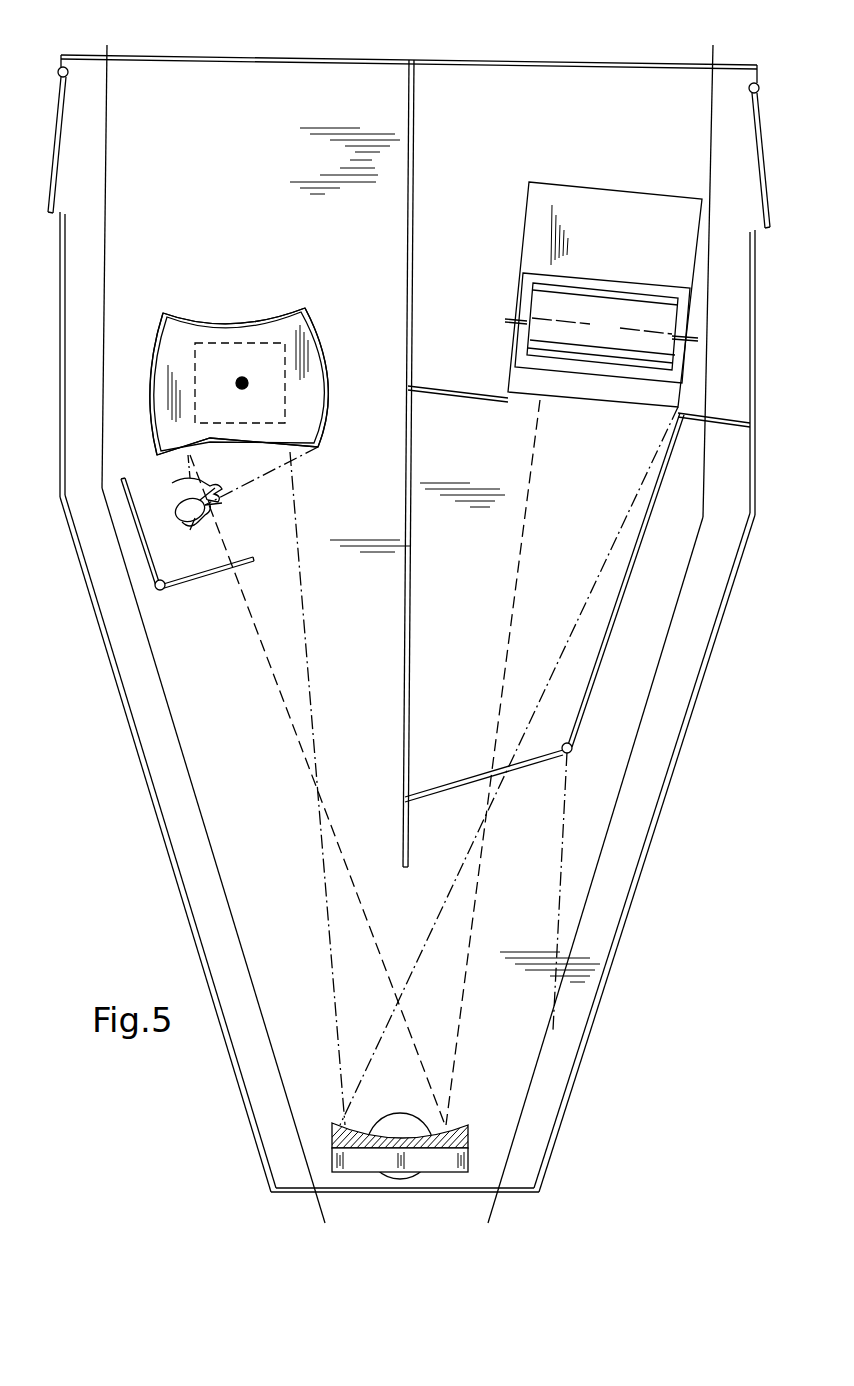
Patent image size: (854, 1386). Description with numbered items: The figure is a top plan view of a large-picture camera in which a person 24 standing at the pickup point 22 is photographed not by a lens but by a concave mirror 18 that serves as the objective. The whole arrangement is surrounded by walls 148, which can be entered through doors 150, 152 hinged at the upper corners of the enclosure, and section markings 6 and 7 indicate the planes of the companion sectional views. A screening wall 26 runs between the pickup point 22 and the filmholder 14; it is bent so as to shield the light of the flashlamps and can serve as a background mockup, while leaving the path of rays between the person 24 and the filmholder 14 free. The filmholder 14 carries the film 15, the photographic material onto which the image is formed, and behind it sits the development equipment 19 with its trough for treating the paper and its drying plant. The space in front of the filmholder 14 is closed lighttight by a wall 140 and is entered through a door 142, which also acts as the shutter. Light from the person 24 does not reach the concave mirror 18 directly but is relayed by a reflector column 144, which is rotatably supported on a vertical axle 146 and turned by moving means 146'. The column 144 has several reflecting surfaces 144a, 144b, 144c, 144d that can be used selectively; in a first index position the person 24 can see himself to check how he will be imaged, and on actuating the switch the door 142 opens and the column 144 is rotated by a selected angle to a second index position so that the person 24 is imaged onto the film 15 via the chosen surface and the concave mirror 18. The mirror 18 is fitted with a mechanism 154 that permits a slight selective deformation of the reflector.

The section line 6- 6 is at (686, 50).
The section line 7- 7 is at (137, 48).
The filmholder 14 is at (518, 380).
The film 15 is at (530, 398).
The concave mirror 18 is at (470, 1133).
The development equipment 19 is at (537, 298).
The pickup point 22 is at (260, 530).
The person 24 is at (187, 534).
The screening wall 26 is at (410, 620).
The wall 140 is at (612, 612).
The door 142 is at (500, 770).
The reflector column 144 is at (183, 332).
The bottom edge of mirror 144 144a is at (306, 456).
The left edge of mirror 144 144b is at (148, 393).
The top edge of mirror 144 144c is at (278, 320).
The right edge of mirror 144 144d is at (322, 353).
The vertical axle 146 is at (263, 396).
The moving means 146' is at (240, 350).
The walls 148 is at (606, 956).
The door 150 is at (59, 149).
The door 152 is at (755, 126).
The mechanism 154 is at (332, 1158).